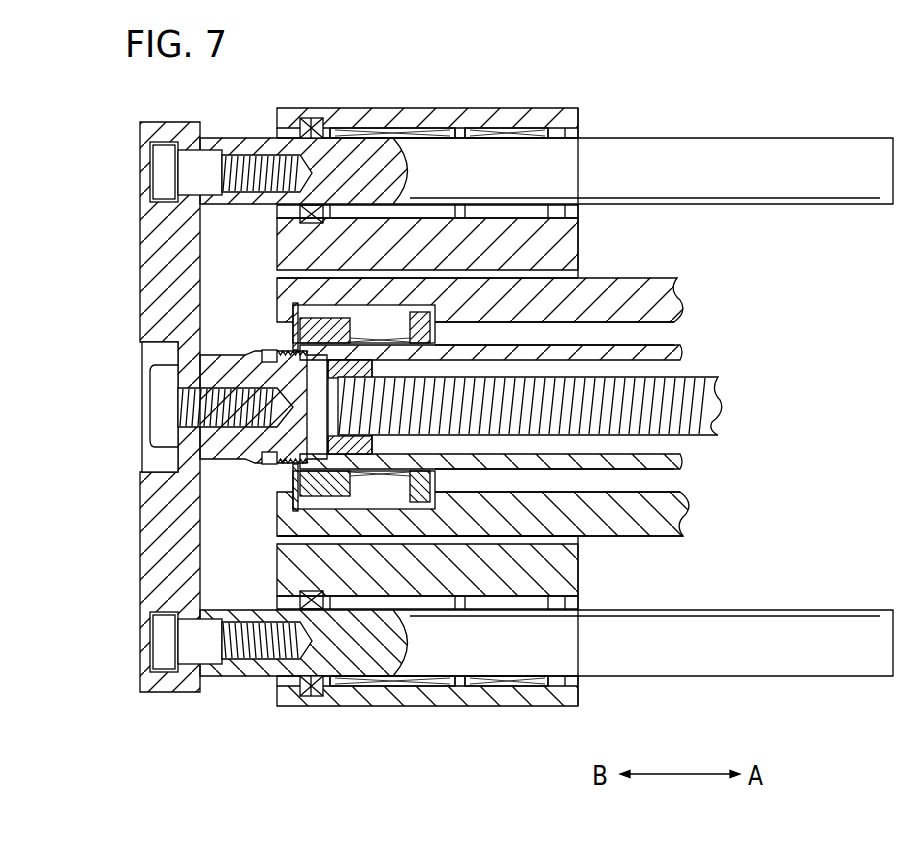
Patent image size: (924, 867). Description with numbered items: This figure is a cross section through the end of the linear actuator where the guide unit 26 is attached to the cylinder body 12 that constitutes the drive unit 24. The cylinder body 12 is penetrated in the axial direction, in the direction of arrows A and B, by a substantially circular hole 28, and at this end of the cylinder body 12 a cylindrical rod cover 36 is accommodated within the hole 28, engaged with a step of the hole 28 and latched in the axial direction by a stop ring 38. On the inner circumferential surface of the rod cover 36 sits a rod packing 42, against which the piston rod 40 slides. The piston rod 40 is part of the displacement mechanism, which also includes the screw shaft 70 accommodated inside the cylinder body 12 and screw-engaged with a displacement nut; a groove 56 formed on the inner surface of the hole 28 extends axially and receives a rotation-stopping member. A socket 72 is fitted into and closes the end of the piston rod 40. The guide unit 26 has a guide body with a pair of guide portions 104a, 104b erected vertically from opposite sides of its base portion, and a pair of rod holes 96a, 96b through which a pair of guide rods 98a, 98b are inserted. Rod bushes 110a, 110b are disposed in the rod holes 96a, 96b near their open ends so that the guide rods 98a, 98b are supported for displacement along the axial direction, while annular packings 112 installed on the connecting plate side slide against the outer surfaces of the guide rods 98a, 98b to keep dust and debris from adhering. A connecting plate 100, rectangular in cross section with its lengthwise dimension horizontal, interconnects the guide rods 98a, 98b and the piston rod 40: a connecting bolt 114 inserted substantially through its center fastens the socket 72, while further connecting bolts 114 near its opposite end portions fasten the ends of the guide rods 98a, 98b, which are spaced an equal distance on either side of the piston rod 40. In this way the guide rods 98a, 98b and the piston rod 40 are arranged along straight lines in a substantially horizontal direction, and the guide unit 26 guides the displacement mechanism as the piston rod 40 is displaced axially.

The cylinder body 12 is at (672, 292).
The drive unit 24 is at (693, 525).
The guide unit 26 is at (466, 81).
The hole 28 is at (570, 530).
The rod cover 36 is at (370, 318).
The stop ring 38 is at (293, 326).
The piston rod 40 is at (680, 356).
The rod packing 42 is at (293, 516).
The groove 56 is at (680, 478).
The screw shaft 70 is at (700, 410).
The socket 72 is at (248, 455).
The rod hole 96a is at (580, 135).
The rod hole 96b is at (580, 678).
The guide rod 98a is at (768, 148).
The guide rod 98b is at (768, 666).
The connecting plate 100 is at (162, 272).
The guide portion 104a is at (286, 252).
The guide portion 104b is at (288, 578).
The rod bush 110a is at (378, 128).
The rod bush 110b is at (550, 128).
The packing 112 is at (318, 117).
The connecting bolt 114 is at (158, 172).